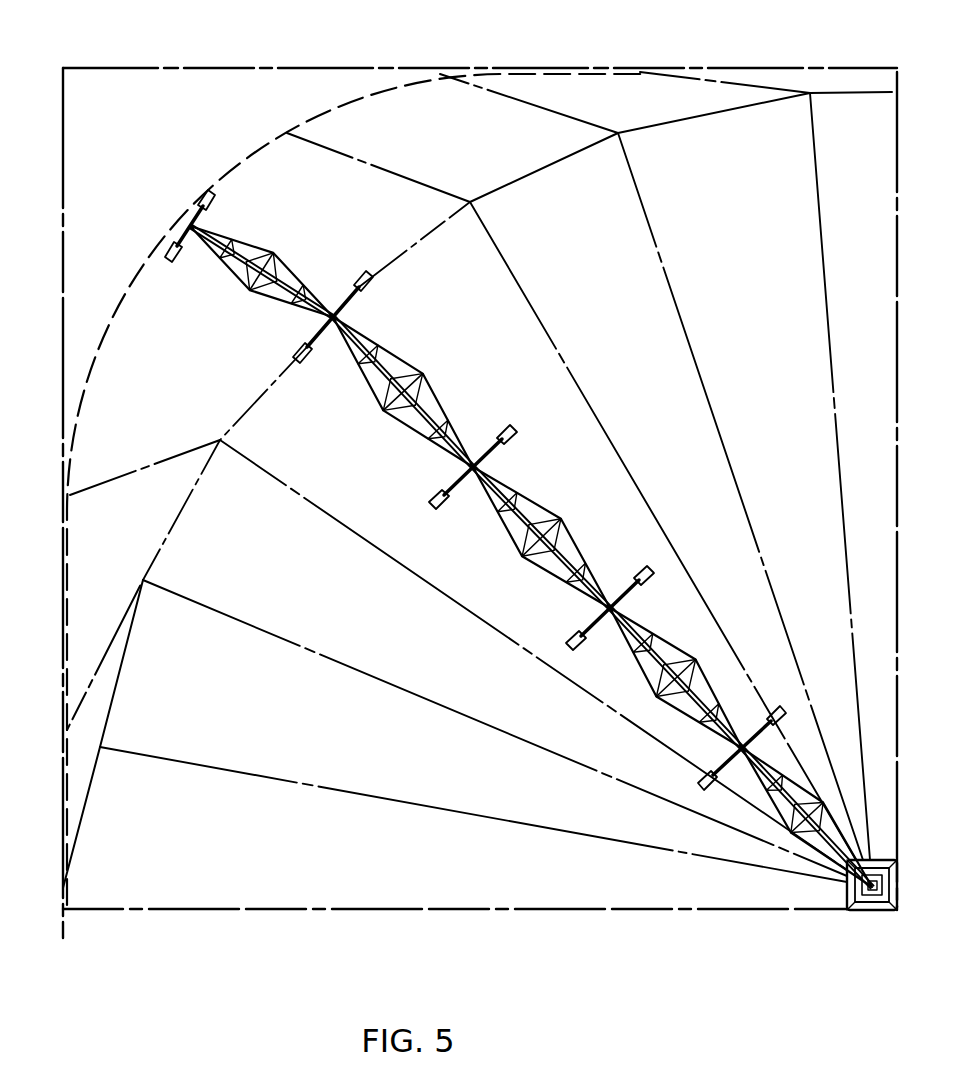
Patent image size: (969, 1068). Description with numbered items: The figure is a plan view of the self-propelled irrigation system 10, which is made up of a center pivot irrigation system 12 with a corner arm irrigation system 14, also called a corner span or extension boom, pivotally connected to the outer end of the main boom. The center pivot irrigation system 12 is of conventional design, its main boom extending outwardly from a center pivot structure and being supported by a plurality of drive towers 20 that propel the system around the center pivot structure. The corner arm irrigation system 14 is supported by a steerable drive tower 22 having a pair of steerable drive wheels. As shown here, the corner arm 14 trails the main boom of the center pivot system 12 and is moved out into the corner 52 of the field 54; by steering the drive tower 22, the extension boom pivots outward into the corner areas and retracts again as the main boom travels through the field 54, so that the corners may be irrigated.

The self-propelled irrigation system 10 is at (510, 572).
The center pivot irrigation system 12 is at (820, 235).
The corner arm irrigation system 14 is at (697, 83).
The drive towers 20 is at (446, 482).
The steerable drive tower 22 is at (193, 258).
The corner 52 is at (174, 112).
The field 54 is at (62, 130).